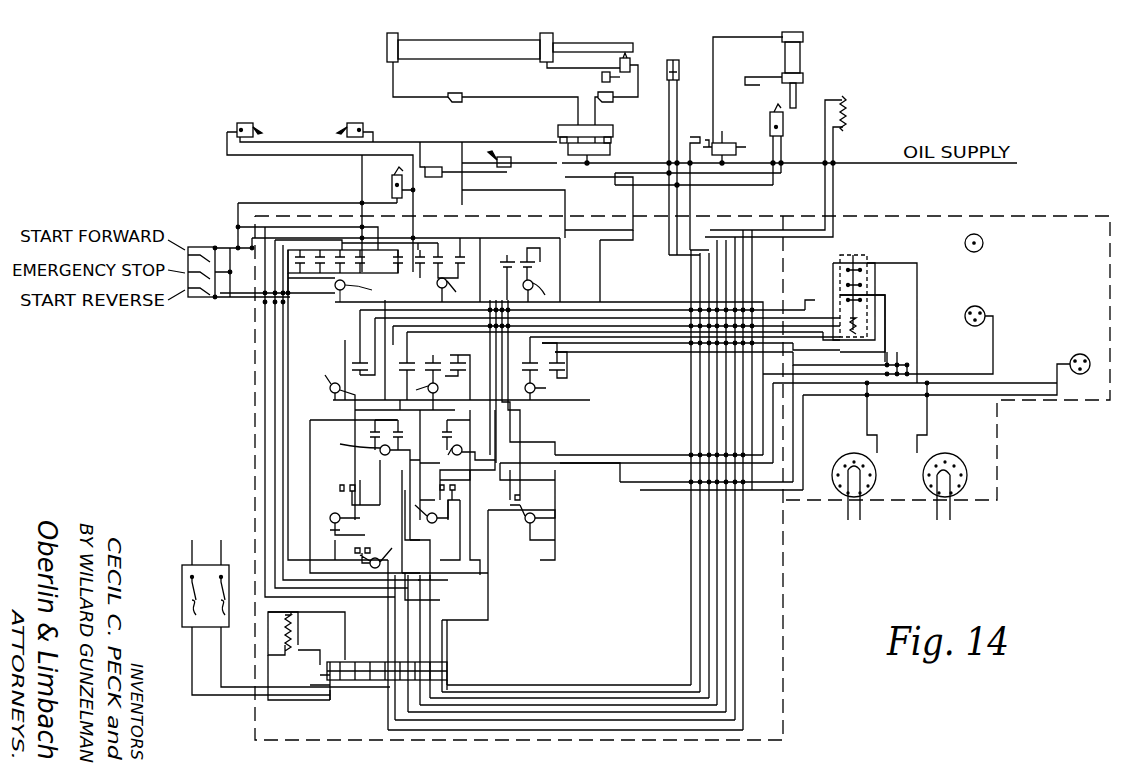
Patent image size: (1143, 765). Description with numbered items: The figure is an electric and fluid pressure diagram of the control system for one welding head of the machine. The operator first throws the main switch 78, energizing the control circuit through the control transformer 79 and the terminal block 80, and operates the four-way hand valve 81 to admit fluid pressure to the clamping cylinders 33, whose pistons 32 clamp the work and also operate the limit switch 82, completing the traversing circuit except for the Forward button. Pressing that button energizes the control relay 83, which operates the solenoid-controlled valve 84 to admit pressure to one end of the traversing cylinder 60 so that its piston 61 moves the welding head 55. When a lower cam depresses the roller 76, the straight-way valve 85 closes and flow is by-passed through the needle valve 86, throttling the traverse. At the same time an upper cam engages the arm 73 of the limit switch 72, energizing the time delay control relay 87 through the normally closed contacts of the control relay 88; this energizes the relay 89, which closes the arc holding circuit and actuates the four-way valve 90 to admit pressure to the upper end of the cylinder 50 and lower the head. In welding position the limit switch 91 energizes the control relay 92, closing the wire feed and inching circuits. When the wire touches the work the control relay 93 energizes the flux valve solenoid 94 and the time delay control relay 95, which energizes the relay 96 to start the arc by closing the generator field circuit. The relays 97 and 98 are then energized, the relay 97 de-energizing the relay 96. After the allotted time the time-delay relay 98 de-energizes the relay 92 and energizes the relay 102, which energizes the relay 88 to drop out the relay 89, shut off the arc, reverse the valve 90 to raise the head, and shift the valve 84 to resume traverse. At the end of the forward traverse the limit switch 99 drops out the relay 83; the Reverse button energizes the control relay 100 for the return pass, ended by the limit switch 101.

The fluid pressure piston 32 is at (425, 167).
The cylinder 33 is at (437, 167).
The cylinder 50 is at (797, 60).
The arc welding head 55 is at (940, 216).
The fluid pressure cylinder 60 is at (478, 40).
The piston 61 is at (583, 43).
The limit switch 72 is at (679, 65).
The operating arm 73 is at (673, 58).
The roller 76 is at (631, 60).
The main switch 78 is at (203, 560).
The control transformer 79 is at (298, 635).
The terminal block 80 is at (450, 672).
The 4-way hand valve 81 is at (512, 168).
The limit switch 82 is at (392, 186).
The control relay 83 is at (365, 291).
The solenoid-controlled valve 84 is at (568, 150).
The straight-way valve 85 is at (625, 72).
The needle valve 86 is at (602, 78).
The time delay control relay 87 is at (377, 551).
The control relay 88 is at (436, 523).
The relay 89 is at (415, 389).
The four-way valve 90 is at (726, 140).
The limit switch 91 is at (783, 124).
The control relay 92 is at (547, 389).
The control relay 93 is at (471, 441).
The flux valve solenoid 94 is at (848, 112).
The time delay control relay 95 is at (330, 516).
The relay 96 is at (330, 377).
The relay 97 is at (364, 485).
The time-delay relay 98 is at (555, 500).
The limit switch 99 is at (353, 124).
The control relay 100 is at (461, 292).
The limit switch 101 is at (249, 124).
The relay 102 is at (550, 291).